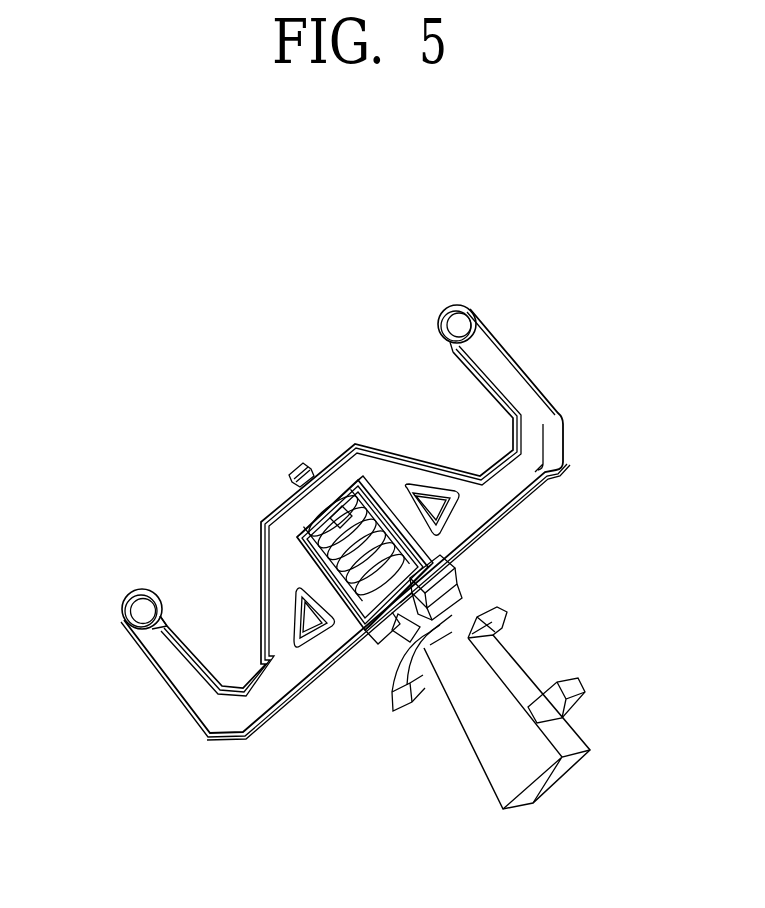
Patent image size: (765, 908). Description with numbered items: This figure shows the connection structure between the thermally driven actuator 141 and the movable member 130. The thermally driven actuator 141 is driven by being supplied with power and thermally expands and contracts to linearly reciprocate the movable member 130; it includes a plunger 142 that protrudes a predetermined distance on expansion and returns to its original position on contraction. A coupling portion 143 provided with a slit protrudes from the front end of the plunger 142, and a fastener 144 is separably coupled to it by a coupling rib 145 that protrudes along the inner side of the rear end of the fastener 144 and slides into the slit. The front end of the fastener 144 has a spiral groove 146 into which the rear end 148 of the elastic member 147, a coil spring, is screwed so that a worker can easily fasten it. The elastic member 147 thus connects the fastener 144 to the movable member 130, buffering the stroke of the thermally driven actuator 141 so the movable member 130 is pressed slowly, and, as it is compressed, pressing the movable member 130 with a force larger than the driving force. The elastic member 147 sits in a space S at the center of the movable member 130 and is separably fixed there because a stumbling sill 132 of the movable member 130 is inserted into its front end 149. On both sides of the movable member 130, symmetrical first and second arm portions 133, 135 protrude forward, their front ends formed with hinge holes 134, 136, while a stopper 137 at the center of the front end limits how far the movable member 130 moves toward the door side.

The movable member 130 is at (547, 392).
The stumbling sill 132 is at (360, 488).
The first arm portion 133 is at (155, 667).
The hinge hole 134 is at (130, 603).
The second arm portion 135 is at (507, 354).
The hinge hole 136 is at (458, 322).
The stopper 137 is at (295, 465).
The thermally driven actuator 141 is at (481, 791).
The plunger 142 is at (462, 614).
The coupling portion 143 is at (430, 645).
The fastener 144 is at (440, 595).
The coupling rib 145 is at (405, 635).
The spiral groove 146 is at (363, 612).
The elastic member 147 is at (393, 537).
The rear end 148 is at (432, 566).
The front end 149 is at (350, 528).
The space S is at (345, 583).